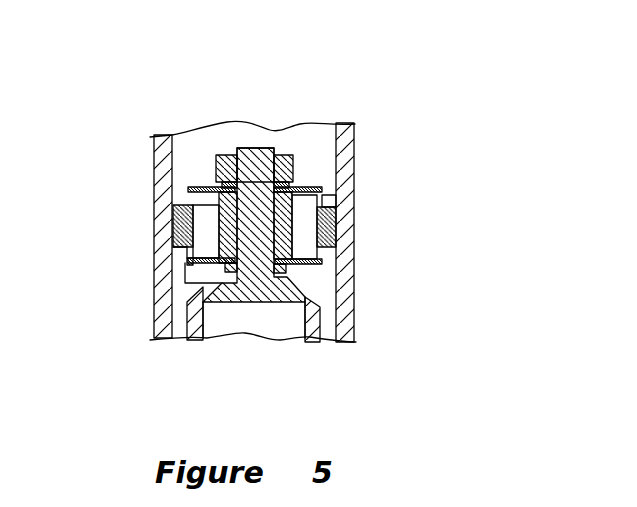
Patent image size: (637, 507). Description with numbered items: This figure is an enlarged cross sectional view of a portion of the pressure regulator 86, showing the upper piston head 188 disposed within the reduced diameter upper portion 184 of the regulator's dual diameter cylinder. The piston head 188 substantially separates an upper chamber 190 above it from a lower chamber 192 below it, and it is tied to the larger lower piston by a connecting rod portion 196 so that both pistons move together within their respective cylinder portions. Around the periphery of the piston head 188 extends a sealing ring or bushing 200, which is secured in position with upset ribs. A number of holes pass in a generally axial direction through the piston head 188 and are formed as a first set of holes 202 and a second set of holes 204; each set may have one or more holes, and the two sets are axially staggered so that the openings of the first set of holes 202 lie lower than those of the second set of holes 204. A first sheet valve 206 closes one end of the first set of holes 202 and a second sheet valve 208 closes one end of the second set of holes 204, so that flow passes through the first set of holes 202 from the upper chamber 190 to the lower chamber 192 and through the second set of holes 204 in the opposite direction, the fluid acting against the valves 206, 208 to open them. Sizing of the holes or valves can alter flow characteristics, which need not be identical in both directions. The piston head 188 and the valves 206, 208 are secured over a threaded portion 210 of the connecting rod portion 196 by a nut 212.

The pressure regulator 86 is at (387, 122).
The reduced diameter upper portion 184 is at (153, 175).
The upper piston head 188 is at (335, 194).
The upper chamber 190 is at (288, 137).
The lower chamber 192 is at (187, 275).
The connecting rod portion 196 is at (188, 338).
The sealing ring or bushing 200 is at (337, 235).
The first set of holes 202 is at (200, 226).
The second set of holes 204 is at (337, 227).
The first sheet valve 206 is at (313, 266).
The second sheet valve 208 is at (308, 186).
The threaded portion 210 is at (255, 157).
The nut 212 is at (222, 155).